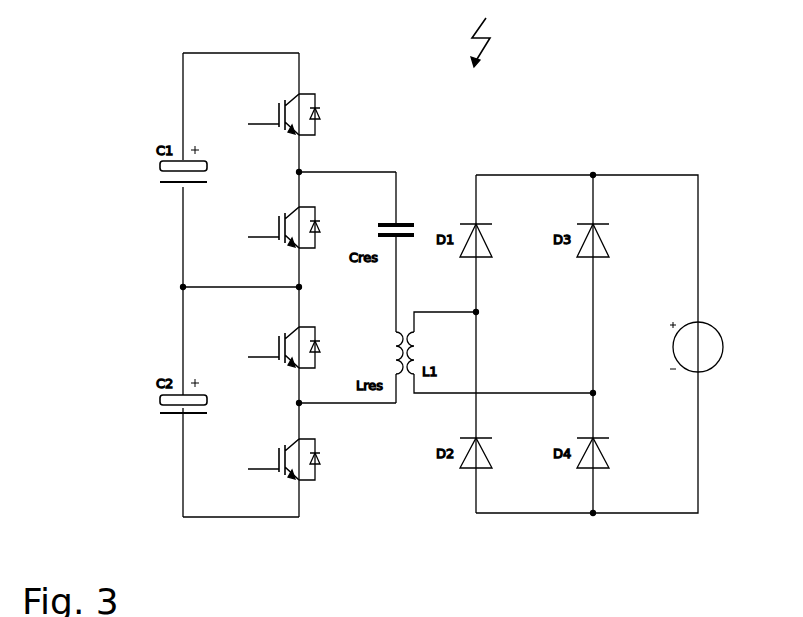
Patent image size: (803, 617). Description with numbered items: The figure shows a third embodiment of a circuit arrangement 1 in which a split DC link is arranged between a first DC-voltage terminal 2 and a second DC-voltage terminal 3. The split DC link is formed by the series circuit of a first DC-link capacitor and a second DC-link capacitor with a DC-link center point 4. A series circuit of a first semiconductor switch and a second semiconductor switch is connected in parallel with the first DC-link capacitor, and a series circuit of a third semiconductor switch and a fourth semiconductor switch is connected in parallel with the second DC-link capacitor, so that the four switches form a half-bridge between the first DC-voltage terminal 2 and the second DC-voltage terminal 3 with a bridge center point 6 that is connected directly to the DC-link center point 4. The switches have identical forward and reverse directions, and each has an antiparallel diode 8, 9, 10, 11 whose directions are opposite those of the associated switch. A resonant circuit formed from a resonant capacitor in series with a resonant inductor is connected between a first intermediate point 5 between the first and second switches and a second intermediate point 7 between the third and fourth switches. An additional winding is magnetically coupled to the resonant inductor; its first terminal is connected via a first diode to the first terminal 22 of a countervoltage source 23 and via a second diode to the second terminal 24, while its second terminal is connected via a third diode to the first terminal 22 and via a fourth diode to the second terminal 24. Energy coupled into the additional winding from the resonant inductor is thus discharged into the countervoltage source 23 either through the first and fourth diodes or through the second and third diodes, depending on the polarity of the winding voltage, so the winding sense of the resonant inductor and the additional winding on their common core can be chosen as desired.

The circuit arrangement 1 is at (475, 40).
The first DC-voltage terminal 2 is at (186, 45).
The second DC-voltage terminal 3 is at (184, 522).
The DC-link center point 4 is at (173, 283).
The first intermediate point 5 is at (295, 172).
The bridge center point 6 is at (304, 285).
The second intermediate point 7 is at (295, 403).
The antiparallel diode 8 is at (318, 115).
The antiparallel diode 9 is at (318, 228).
The antiparallel diode 10 is at (318, 347).
The antiparallel diode 11 is at (318, 458).
The first terminal of the countervoltage source 22 is at (704, 257).
The countervoltage source 23 is at (727, 338).
The second terminal of the countervoltage source 24 is at (704, 407).